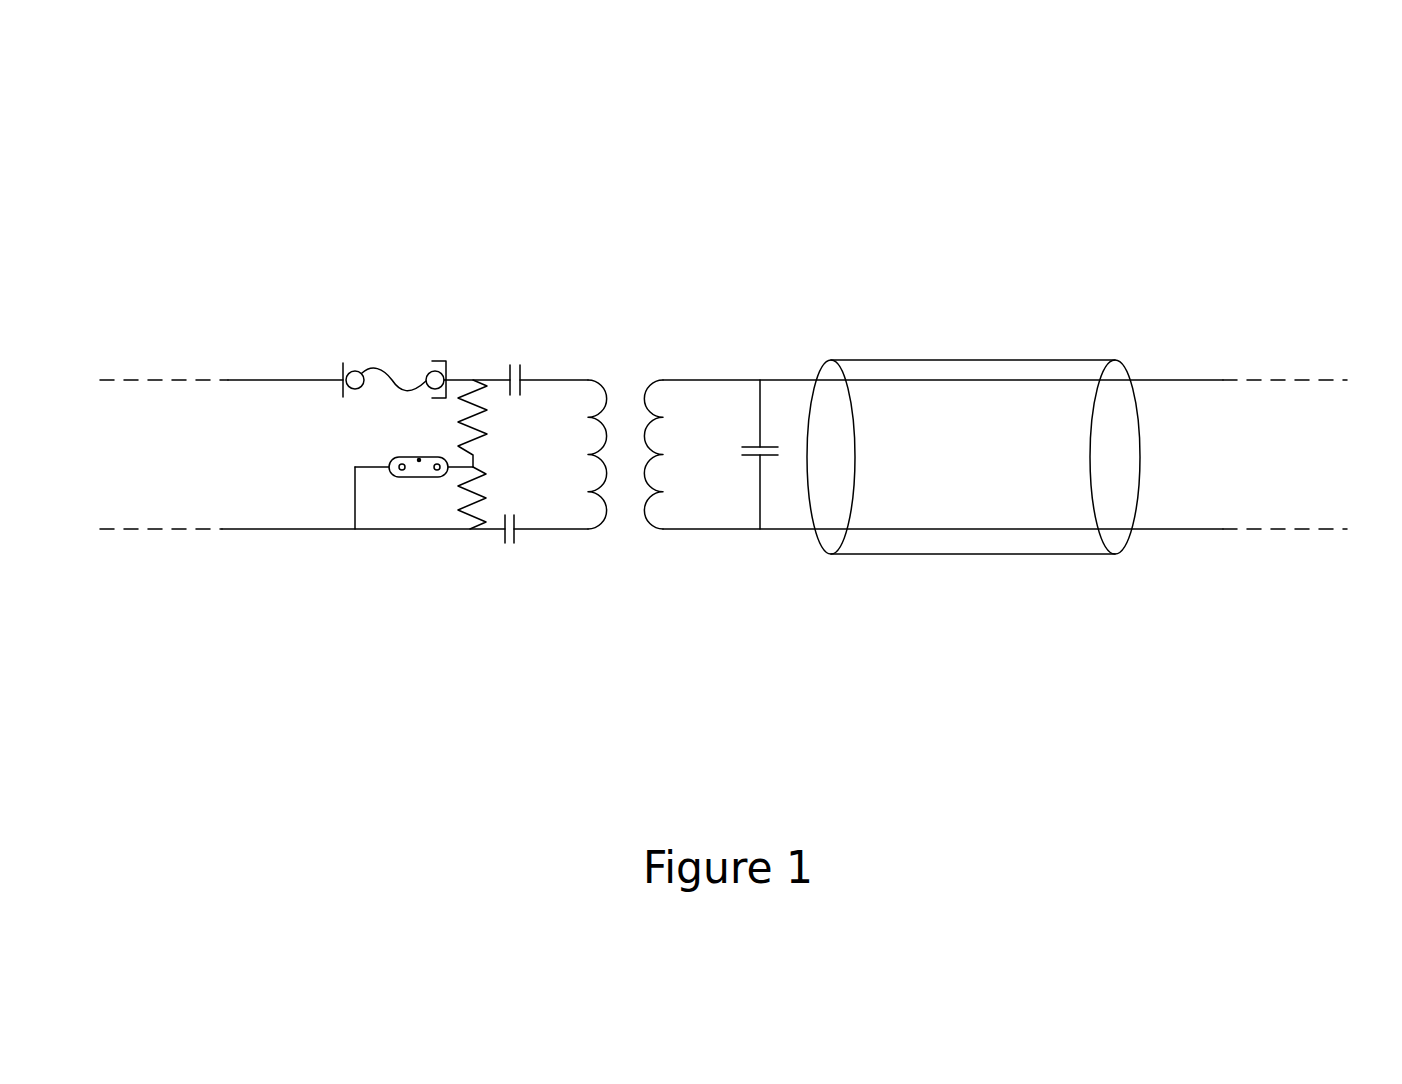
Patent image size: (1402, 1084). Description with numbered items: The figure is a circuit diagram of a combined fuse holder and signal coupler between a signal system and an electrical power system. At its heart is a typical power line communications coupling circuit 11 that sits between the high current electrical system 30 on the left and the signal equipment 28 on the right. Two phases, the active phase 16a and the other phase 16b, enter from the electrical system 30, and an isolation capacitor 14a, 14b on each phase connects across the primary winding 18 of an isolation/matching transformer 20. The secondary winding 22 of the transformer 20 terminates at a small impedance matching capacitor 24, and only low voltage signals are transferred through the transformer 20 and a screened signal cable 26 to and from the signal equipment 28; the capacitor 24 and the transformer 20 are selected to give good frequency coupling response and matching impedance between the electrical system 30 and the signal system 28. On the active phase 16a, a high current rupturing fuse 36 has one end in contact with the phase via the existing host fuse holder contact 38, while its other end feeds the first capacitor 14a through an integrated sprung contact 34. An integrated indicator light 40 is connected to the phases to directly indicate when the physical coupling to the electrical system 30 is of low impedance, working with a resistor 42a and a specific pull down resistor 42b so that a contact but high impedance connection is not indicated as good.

The power line communications coupling circuit 11 is at (572, 562).
The isolation capacitor 14a is at (519, 357).
The isolation capacitor 14b is at (508, 553).
The active phase 16a is at (230, 378).
The phase 16b is at (295, 530).
The primary winding 18 is at (607, 477).
The isolation/matching transformer 20 is at (623, 379).
The secondary winding 22 is at (646, 440).
The impedance matching capacitor 24 is at (770, 470).
The screened signal cable 26 is at (920, 352).
The signal equipment 28 is at (1304, 437).
The electrical system 30 is at (130, 447).
The sprung contact 34 is at (443, 360).
The high current rupturing fuse 36 is at (384, 367).
The host fuse holder contact 38 is at (343, 363).
The indicator light 40 is at (408, 478).
The resistor 42a is at (481, 372).
The pull down resistor 42b is at (455, 500).